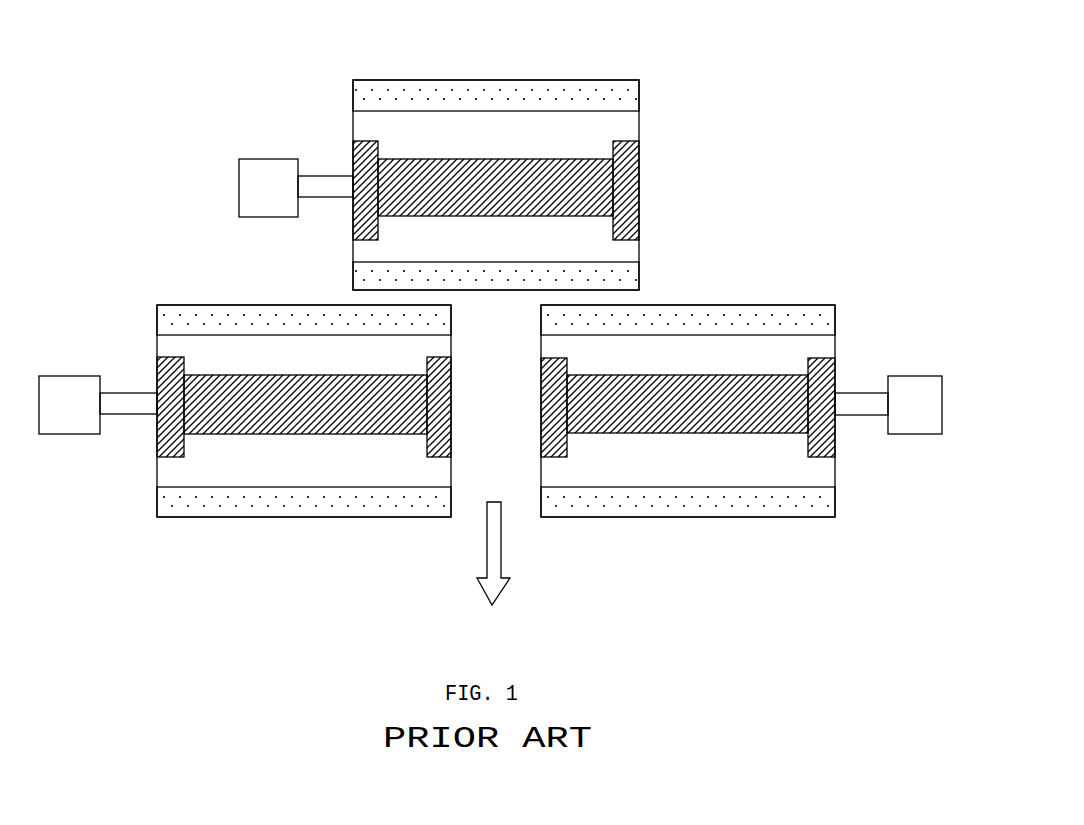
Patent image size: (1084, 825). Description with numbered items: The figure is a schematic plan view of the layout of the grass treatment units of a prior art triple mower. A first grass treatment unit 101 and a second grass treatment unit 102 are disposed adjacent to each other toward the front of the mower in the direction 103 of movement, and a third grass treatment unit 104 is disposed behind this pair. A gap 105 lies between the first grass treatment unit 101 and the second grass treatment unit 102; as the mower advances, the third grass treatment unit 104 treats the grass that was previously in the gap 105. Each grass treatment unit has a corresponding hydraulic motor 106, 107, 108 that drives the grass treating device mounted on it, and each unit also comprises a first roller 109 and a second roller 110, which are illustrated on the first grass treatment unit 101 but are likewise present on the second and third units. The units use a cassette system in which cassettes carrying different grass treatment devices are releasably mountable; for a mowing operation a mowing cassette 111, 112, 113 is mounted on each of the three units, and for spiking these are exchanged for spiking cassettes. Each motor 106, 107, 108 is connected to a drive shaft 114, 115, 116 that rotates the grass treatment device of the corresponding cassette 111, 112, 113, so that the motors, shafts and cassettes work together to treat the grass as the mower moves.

The first grass treatment unit 101 is at (275, 413).
The second grass treatment unit 102 is at (727, 436).
The direction of movement 103 is at (501, 555).
The third grass treatment unit 104 is at (542, 185).
The gap 105 is at (513, 395).
The hydraulic motor 106 is at (55, 376).
The hydraulic motor 107 is at (912, 385).
The hydraulic motor 108 is at (255, 158).
The first roller 109 is at (178, 320).
The second roller 110 is at (183, 503).
The mowing cassette 111 is at (293, 422).
The mowing cassette 112 is at (713, 422).
The mowing cassette 113 is at (603, 187).
The drive shaft 114 is at (118, 392).
The drive shaft 115 is at (855, 392).
The drive shaft 116 is at (315, 176).